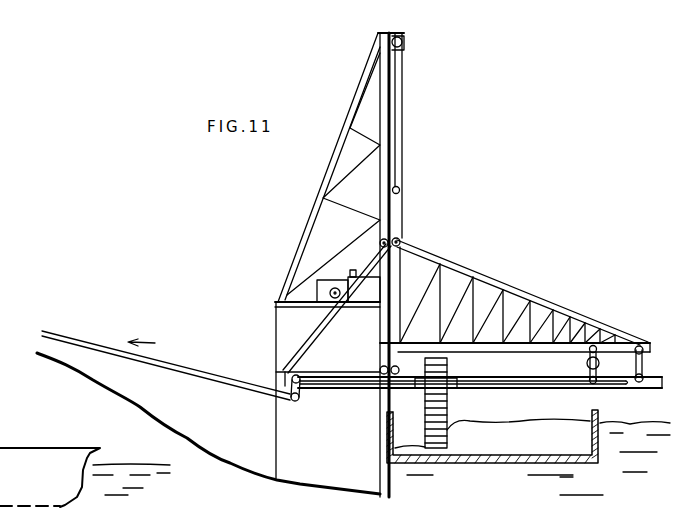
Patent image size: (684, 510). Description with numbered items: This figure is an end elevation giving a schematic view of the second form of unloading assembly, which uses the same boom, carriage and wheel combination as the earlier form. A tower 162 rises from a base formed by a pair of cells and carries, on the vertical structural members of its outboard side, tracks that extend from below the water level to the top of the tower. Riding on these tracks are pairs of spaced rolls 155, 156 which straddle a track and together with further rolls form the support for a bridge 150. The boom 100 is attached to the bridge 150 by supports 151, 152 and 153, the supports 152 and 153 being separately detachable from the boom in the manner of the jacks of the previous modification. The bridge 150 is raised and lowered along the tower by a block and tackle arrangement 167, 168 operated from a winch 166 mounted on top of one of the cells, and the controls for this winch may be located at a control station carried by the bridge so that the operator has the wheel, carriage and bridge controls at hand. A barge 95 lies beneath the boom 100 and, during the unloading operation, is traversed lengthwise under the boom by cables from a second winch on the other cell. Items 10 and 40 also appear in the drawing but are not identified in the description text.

The ladder column 10 is at (447, 432).
The mounting bracket 40 is at (453, 395).
The barge 95 is at (570, 447).
The boom 100 is at (633, 392).
The bridge 150 is at (522, 294).
The support 151 is at (300, 333).
The support 152 is at (598, 360).
The support 153 is at (647, 367).
The rolls 155 is at (403, 240).
The rolls 156 is at (379, 370).
The tower 162 is at (348, 107).
The winch 166 is at (286, 292).
The block and tackle arrangement 167 is at (350, 190).
The block and tackle arrangement 168 is at (405, 40).